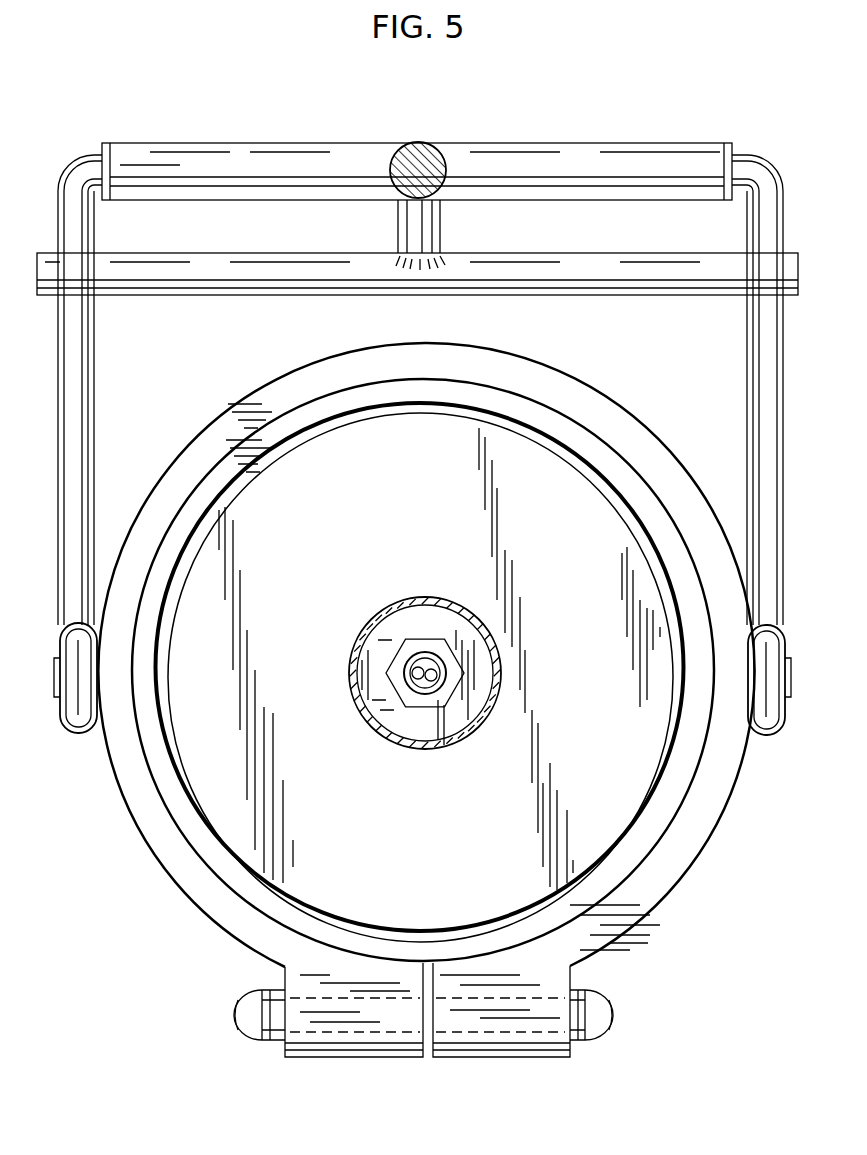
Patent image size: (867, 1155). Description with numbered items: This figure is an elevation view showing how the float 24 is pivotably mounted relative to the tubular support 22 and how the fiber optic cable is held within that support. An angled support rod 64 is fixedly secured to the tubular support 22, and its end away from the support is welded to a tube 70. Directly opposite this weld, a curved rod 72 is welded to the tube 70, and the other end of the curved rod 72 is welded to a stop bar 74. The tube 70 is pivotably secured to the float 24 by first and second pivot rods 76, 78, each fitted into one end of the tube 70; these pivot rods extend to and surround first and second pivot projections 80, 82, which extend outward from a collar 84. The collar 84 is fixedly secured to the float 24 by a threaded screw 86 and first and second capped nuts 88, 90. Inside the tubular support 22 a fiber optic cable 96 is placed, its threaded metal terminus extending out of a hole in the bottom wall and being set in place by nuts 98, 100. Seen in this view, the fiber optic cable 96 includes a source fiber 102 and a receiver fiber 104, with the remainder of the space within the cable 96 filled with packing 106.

The tubular support 22 is at (354, 652).
The float 24 is at (165, 762).
The angled support rod 64 is at (428, 144).
The tube 70 is at (203, 142).
The curved rod 72 is at (398, 222).
The stop bar 74 is at (230, 296).
The first pivot rod 76 is at (90, 466).
The second pivot rod 78 is at (748, 462).
The first pivot projection 80 is at (56, 665).
The second pivot projection 82 is at (791, 672).
The collar 84 is at (140, 840).
The threaded screw 86 is at (476, 1036).
The first capped nut 88 is at (600, 1040).
The second capped nut 90 is at (232, 1045).
The fiber optic cable 96 is at (430, 660).
The nut 98 is at (418, 660).
The nut 100 is at (398, 700).
The source fiber 102 is at (433, 690).
The receiver fiber 104 is at (412, 672).
The packing 106 is at (425, 660).